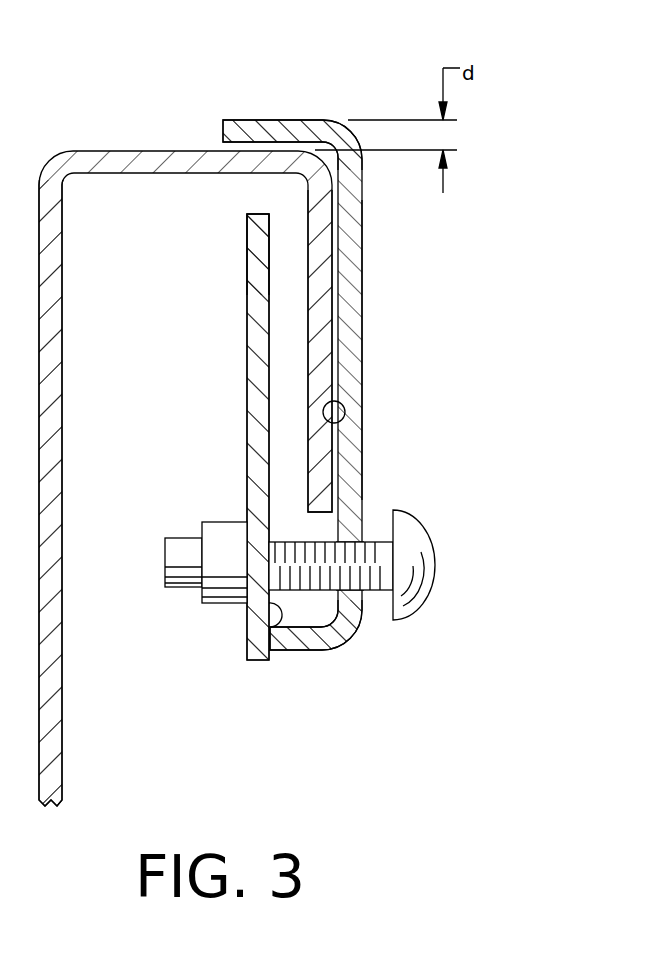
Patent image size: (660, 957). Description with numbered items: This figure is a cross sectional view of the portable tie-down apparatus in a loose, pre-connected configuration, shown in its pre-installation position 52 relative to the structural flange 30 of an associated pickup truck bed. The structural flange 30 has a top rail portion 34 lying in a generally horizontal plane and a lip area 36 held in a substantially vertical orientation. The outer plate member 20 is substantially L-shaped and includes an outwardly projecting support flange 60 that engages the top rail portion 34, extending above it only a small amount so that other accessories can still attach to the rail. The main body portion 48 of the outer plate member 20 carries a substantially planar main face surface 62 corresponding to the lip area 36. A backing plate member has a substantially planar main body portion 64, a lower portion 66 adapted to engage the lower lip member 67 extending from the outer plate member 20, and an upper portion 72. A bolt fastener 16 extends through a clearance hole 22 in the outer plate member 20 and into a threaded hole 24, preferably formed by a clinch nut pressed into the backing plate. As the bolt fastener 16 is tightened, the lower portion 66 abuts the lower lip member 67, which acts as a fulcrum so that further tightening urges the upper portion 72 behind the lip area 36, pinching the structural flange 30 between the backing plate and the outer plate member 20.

The bolt fastener 16 is at (448, 535).
The outer plate member 20 is at (360, 268).
The clearance hole 22 is at (350, 530).
The threaded hole 24 is at (214, 505).
The structural flange 30 is at (68, 144).
The top rail portion 34 is at (178, 158).
The lip area 36 is at (320, 320).
The main body portion 48 is at (380, 362).
The pre-installation position 52 is at (244, 684).
The support flange 60 is at (244, 125).
The main face surface 62 is at (343, 420).
The main body portion 64 is at (257, 388).
The lower portion 66 is at (265, 636).
The lower lip member 67 is at (320, 643).
The upper portion 72 is at (228, 244).